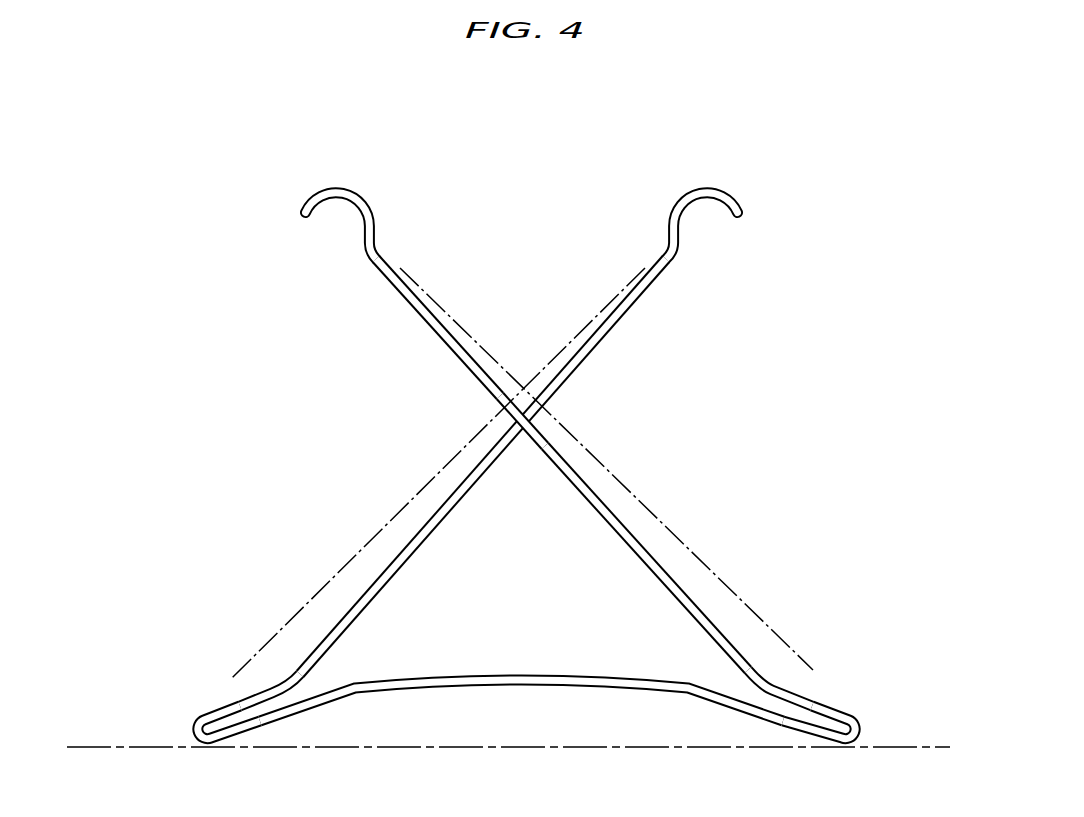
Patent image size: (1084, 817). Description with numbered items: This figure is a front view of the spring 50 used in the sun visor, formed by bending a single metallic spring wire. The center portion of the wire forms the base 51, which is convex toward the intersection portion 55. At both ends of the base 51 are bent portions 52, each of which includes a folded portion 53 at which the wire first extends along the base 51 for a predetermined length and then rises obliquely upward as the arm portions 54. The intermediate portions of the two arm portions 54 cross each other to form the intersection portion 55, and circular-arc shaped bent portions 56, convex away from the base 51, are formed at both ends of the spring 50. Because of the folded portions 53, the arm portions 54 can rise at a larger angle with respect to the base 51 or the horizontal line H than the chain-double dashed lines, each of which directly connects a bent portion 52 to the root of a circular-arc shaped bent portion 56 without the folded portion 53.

The spring 50 is at (270, 386).
The base 51 is at (570, 683).
The bent portion 52 is at (188, 738).
The folded portion 53 is at (221, 707).
The arm portion 54 is at (524, 466).
The intersection portion 55 is at (528, 420).
The circular-arc shaped bent portion 56 is at (337, 188).
The horizontal line H is at (496, 747).